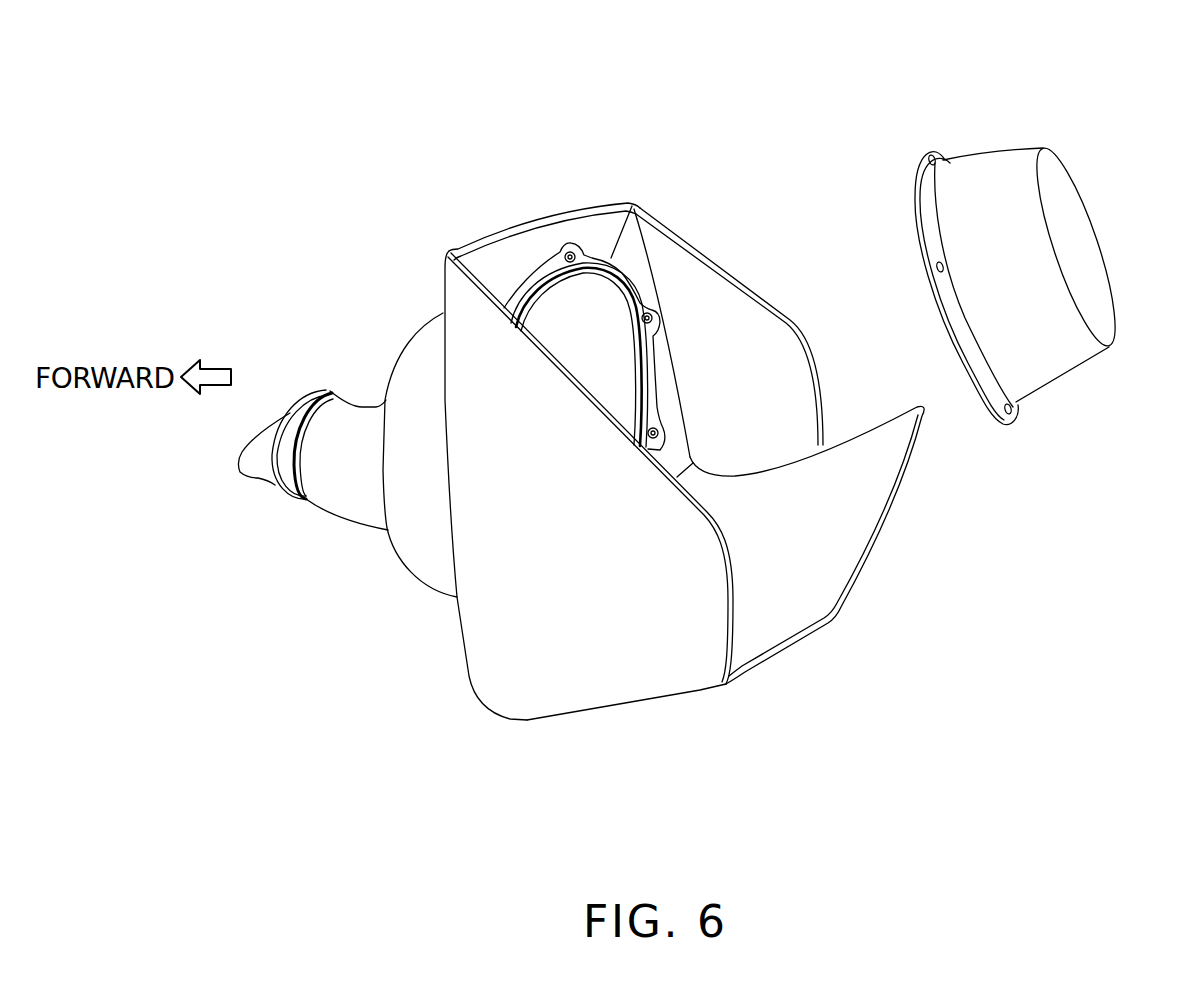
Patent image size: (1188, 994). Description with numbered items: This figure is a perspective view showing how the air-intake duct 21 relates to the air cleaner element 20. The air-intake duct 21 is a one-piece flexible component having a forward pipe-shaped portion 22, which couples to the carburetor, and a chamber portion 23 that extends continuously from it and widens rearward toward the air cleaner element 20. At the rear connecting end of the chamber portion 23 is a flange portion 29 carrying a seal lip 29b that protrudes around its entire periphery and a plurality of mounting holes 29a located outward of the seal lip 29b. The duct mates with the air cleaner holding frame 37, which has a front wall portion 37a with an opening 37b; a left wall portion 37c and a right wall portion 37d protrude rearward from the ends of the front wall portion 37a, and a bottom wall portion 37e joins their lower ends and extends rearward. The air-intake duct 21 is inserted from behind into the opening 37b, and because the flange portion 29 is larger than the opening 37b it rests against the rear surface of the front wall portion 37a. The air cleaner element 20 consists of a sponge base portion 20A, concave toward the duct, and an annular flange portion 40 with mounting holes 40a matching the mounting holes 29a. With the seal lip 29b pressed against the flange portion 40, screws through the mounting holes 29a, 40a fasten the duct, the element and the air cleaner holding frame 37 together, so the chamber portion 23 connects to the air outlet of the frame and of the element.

The air cleaner element 20 is at (1043, 148).
The base portion 20A is at (1070, 375).
The air-intake duct 21 is at (390, 345).
The pipe-shaped portion 22 is at (327, 510).
The chamber portion 23 is at (423, 581).
The flange portion 29 is at (632, 206).
The mounting holes 29a is at (569, 250).
The seal lip 29b is at (540, 290).
The air cleaner holding frame 37 is at (570, 716).
The front wall portion 37a is at (450, 252).
The opening 37b is at (522, 315).
The left wall portion 37c is at (634, 697).
The right wall portion 37d is at (746, 285).
The bottom wall portion 37e is at (783, 632).
The flange portion 40 is at (998, 417).
The mounting holes 40a is at (927, 147).